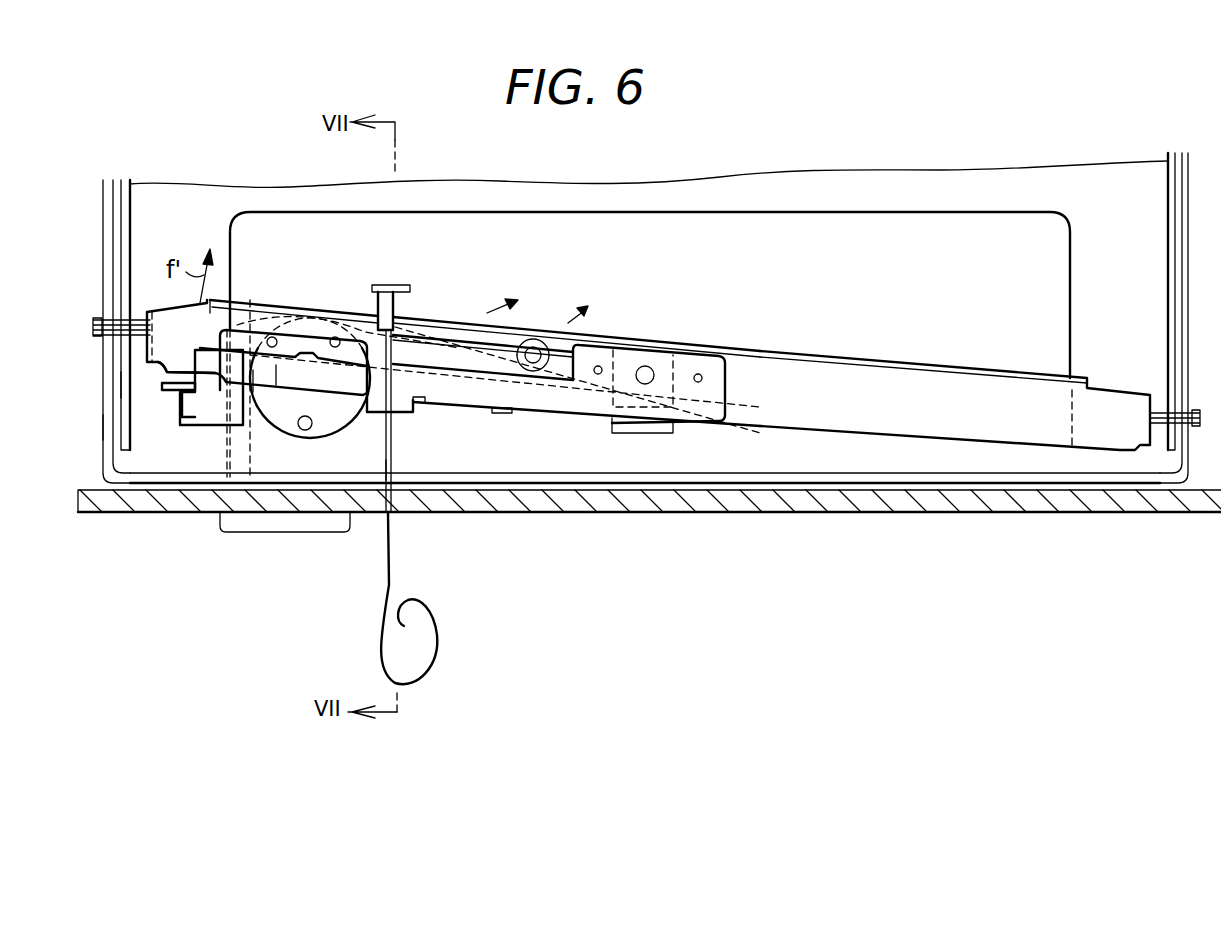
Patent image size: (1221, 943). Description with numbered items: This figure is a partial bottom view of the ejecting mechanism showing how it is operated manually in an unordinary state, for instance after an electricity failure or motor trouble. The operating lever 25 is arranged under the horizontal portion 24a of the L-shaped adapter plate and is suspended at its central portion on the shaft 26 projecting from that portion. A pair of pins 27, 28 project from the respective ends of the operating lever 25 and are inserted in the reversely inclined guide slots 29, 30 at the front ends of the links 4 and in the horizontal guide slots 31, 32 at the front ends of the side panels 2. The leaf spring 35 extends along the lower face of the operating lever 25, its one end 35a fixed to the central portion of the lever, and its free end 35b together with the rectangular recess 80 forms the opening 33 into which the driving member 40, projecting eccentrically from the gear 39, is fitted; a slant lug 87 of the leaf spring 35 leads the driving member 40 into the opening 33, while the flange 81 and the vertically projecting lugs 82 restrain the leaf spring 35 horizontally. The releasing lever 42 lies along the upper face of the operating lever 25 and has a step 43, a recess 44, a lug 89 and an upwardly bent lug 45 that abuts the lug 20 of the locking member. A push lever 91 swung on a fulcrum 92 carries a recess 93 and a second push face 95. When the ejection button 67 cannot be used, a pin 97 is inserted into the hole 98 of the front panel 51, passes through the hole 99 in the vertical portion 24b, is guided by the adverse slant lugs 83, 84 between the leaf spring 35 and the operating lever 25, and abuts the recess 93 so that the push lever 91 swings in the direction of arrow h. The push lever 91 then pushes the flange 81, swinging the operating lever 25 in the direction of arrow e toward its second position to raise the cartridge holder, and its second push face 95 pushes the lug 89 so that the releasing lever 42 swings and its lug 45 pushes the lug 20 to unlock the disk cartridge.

The side panel 2 is at (108, 213).
The link 4 is at (120, 253).
The lug 20 is at (172, 392).
The horizontal portion 24a is at (936, 228).
The vertical portion 24b is at (822, 478).
The operating lever 25 is at (803, 370).
The shaft 26 is at (645, 365).
The pin 27 is at (1200, 418).
The pin 28 is at (105, 320).
The inclined guide slot 29 is at (1187, 375).
The inclined guide slot 30 is at (118, 385).
The horizontal guide slot 31 is at (1187, 333).
The horizontal guide slot 32 is at (110, 425).
The opening 33 is at (290, 342).
The leaf spring 35 is at (470, 387).
The one end of the leaf spring 35a is at (593, 400).
The free end of the leaf spring 35b is at (258, 385).
The gear 39 is at (326, 432).
The pin (driving member) 40 is at (306, 430).
The releasing lever 42 is at (318, 305).
The step 43 is at (278, 335).
The recess 44 is at (335, 297).
The lug 45 is at (178, 402).
The front panel 51 is at (983, 505).
The ejection button 67 is at (235, 527).
The rectangular recess 80 is at (333, 340).
The flange 81 is at (485, 355).
The lugs 82 is at (200, 427).
The slant lug 83 is at (397, 417).
The slant lug 84 is at (420, 400).
The slant lug 87 is at (282, 378).
The lug 89 is at (388, 285).
The push lever 91 is at (463, 317).
The fulcrum 92 is at (532, 338).
The recess 93 is at (408, 330).
The second push face 95 is at (397, 280).
The pin 97 is at (390, 577).
The hole 98 is at (390, 518).
The hole 99 is at (380, 473).
The arrow h is at (502, 287).
The arrow e is at (578, 292).